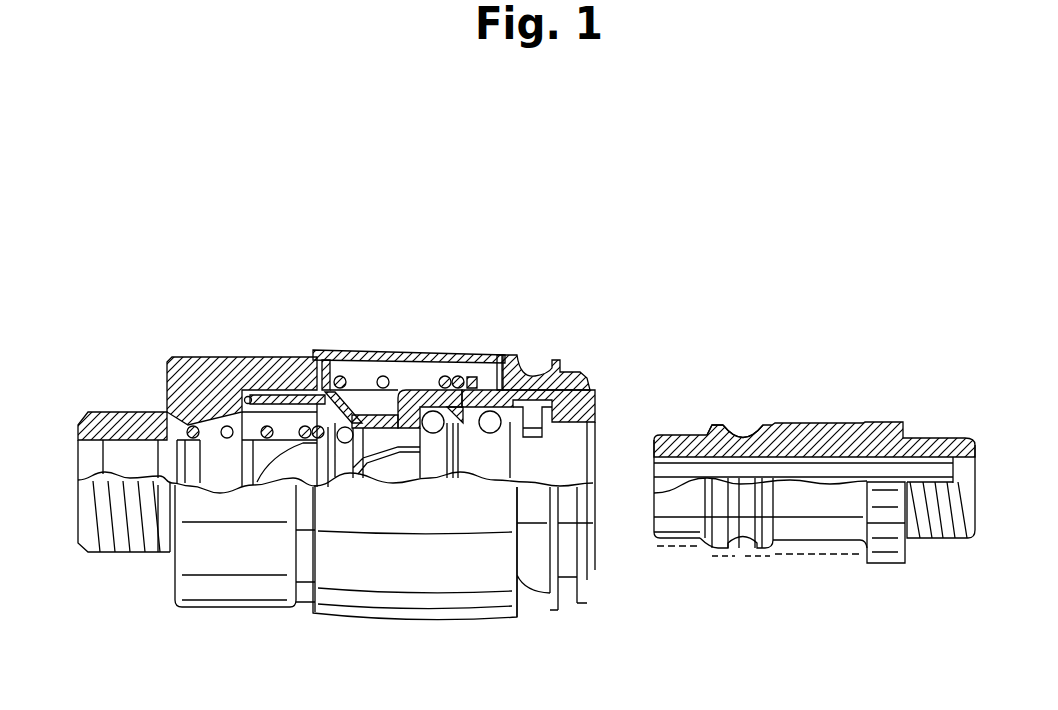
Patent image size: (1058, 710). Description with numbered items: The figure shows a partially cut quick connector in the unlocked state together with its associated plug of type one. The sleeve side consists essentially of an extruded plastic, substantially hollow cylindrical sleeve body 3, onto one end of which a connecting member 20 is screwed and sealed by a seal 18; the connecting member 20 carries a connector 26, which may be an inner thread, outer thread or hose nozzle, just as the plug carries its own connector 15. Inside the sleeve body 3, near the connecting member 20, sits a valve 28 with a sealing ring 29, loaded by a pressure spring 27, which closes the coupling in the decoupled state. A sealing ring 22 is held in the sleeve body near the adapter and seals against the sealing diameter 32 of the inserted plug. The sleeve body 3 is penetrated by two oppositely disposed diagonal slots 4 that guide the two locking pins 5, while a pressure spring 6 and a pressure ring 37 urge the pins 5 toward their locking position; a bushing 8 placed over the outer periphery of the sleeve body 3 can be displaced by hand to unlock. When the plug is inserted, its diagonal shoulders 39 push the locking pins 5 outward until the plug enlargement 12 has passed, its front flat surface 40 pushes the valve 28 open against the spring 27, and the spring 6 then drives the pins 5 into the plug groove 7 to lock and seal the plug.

The sleeve body 3 is at (494, 388).
The diagonal slots 4 is at (474, 424).
The locking pins 5 is at (492, 437).
The pressure spring 6 is at (383, 378).
The plug groove 7 is at (750, 430).
The bushing 8 is at (357, 350).
The plug enlargement 12 is at (722, 417).
The connector 15 is at (940, 428).
The seal 18 is at (243, 390).
The connecting member 20 is at (267, 372).
The sealing ring 22 is at (427, 432).
The connector 26 is at (108, 402).
The pressure spring 27 is at (220, 425).
The valve 28 is at (342, 456).
The sealing ring 29 is at (343, 418).
The sealing diameter 32 is at (680, 430).
The pressure ring 37 is at (471, 373).
The diagonal shoulders 39 is at (705, 428).
The front flat surface 40 is at (645, 512).